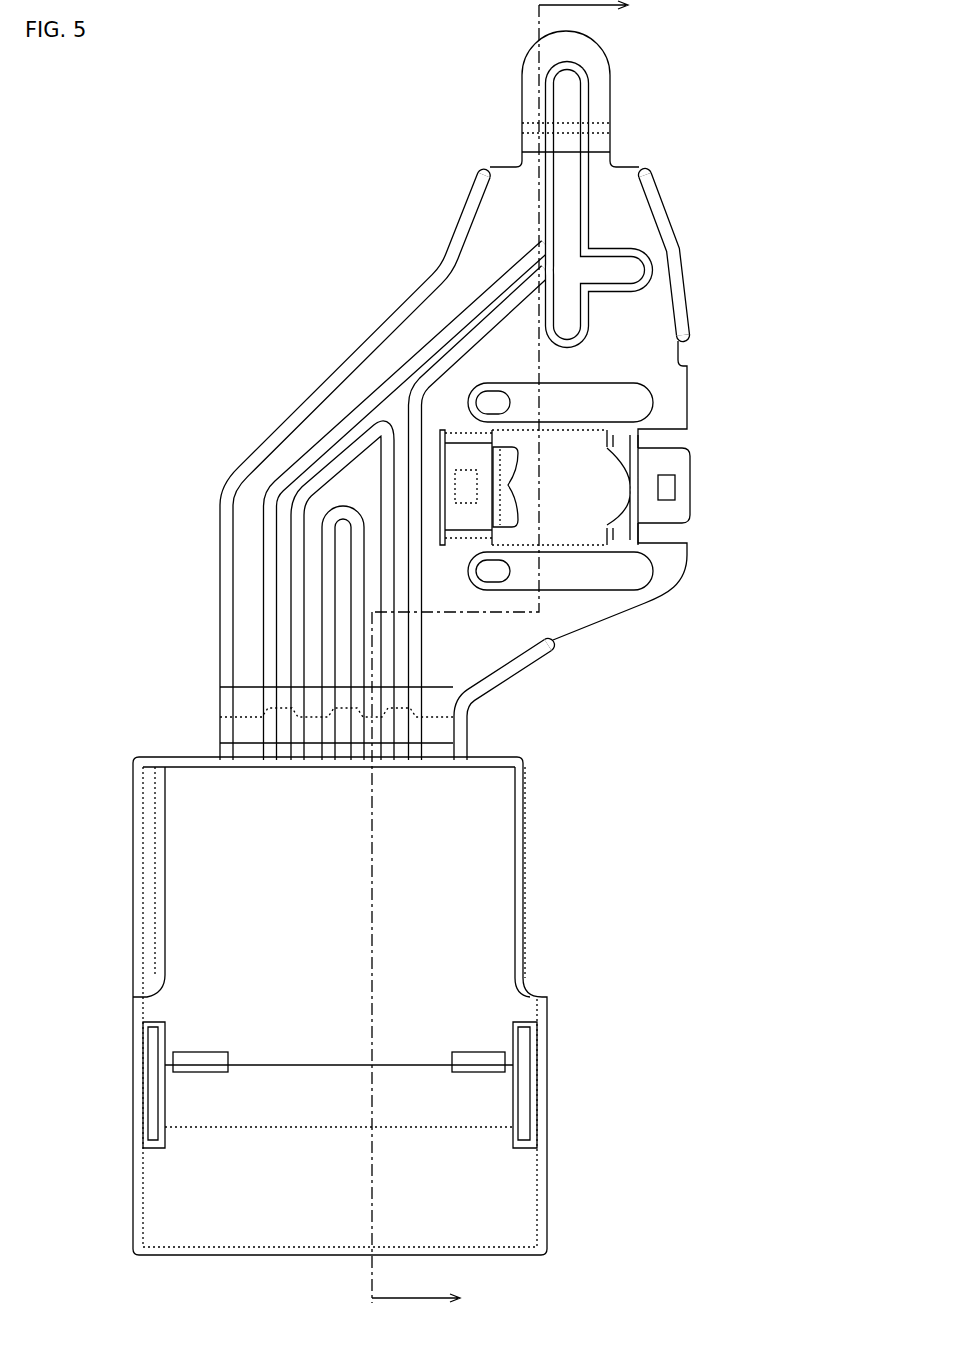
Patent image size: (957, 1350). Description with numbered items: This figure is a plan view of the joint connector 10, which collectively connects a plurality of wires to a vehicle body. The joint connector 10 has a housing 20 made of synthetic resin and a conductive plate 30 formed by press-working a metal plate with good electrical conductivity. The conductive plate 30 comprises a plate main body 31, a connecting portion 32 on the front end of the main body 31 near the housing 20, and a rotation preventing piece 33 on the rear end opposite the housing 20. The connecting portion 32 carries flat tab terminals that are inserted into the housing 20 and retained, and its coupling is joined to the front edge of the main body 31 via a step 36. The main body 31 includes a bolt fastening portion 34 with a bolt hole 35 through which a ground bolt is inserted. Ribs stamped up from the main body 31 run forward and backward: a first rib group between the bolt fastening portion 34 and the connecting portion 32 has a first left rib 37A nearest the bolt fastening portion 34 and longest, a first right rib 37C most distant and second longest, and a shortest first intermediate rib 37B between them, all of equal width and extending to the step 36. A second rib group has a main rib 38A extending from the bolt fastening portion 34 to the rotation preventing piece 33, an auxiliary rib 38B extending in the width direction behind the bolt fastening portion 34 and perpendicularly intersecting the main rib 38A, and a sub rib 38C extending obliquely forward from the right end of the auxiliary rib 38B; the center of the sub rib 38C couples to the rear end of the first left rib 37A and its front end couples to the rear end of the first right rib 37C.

The joint connector 10 is at (325, 112).
The housing 20 is at (608, 827).
The conductive plate 30 is at (237, 296).
The plate main body 31 is at (623, 606).
The connecting portion 32 is at (214, 753).
The rotation preventing piece 33 is at (612, 90).
The bolt fastening portion 34 is at (570, 405).
The bolt hole 35 is at (572, 543).
The step 36 is at (222, 712).
The first left rib 37A is at (405, 647).
The first intermediate rib 37B is at (343, 543).
The first right rib 37C is at (283, 592).
The main rib 38A is at (565, 173).
The auxiliary rib 38B is at (622, 272).
The sub rib 38C is at (440, 345).